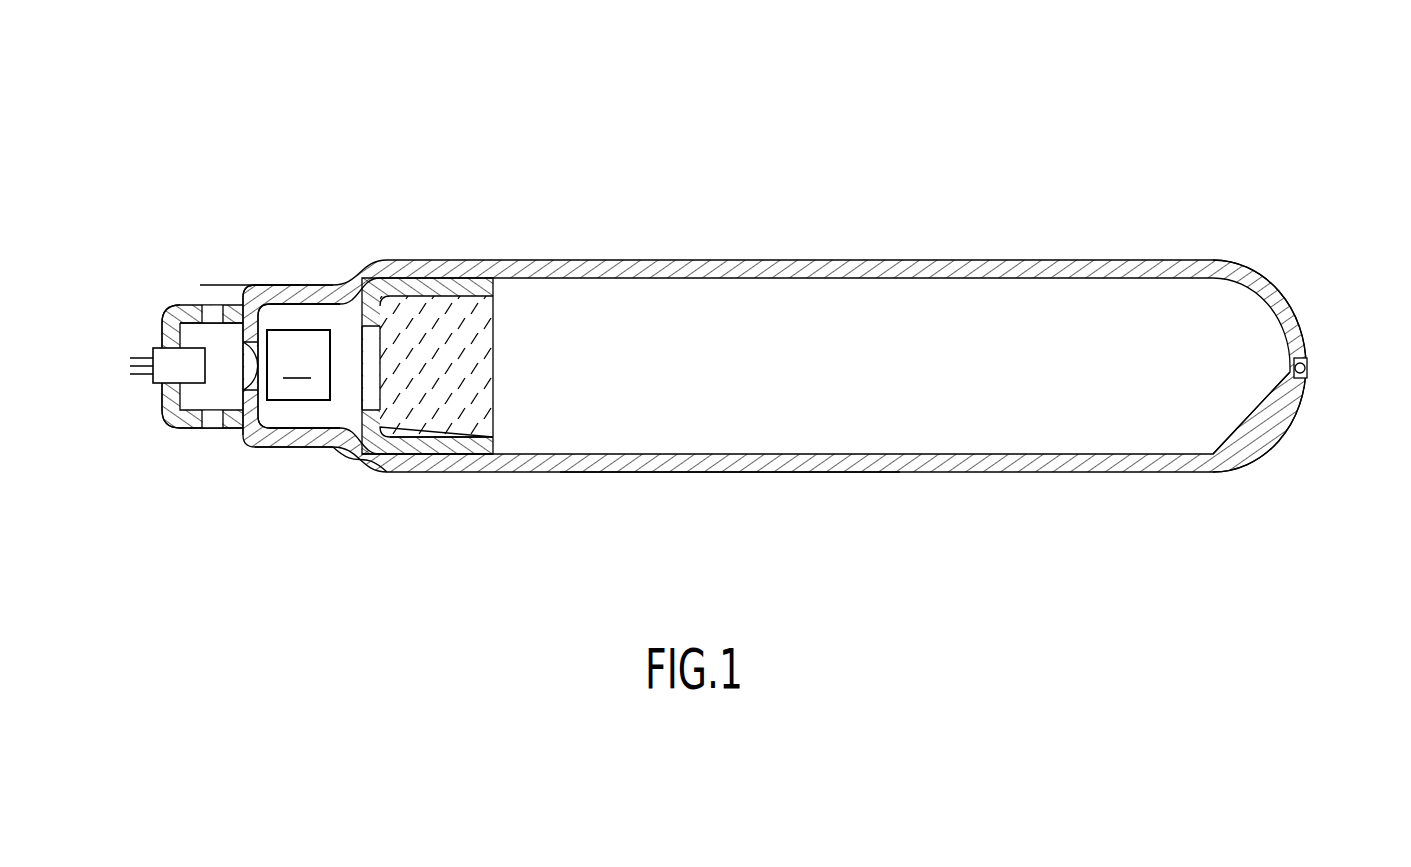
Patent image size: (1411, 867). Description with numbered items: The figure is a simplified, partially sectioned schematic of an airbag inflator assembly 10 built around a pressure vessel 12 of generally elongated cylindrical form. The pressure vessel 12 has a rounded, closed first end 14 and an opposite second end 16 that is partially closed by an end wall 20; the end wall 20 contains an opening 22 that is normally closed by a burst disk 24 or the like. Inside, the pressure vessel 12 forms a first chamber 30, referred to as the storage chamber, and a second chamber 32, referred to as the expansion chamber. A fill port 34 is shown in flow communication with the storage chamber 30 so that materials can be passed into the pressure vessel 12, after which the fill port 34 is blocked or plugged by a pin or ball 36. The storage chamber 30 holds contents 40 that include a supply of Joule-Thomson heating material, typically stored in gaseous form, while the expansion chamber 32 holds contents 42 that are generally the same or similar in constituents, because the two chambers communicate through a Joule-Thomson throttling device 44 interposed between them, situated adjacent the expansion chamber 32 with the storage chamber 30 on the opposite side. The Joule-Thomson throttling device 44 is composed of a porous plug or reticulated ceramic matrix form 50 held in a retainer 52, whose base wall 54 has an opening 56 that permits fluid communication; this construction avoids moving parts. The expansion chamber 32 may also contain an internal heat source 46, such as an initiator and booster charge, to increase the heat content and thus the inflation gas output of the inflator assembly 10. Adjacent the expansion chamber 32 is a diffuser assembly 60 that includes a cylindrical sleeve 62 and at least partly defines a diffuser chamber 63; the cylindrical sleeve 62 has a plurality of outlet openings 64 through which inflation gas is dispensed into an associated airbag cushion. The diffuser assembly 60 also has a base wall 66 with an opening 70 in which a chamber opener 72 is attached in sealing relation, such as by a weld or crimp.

The inflator assembly 10 is at (845, 158).
The pressure vessel 12 is at (712, 256).
The first end 14 is at (1297, 282).
The second end 16 is at (246, 244).
The end wall 20 is at (240, 418).
The opening 22 is at (242, 302).
The burst disk 24 is at (243, 367).
The first chamber 30 is at (717, 478).
The second chamber 32 is at (288, 448).
The fill port 34 is at (1302, 398).
The ball 36 is at (1308, 358).
The contents 40 is at (930, 432).
The contents 42 is at (337, 322).
The Joule-Thomson throttling device 44 is at (407, 425).
The heat source 46 is at (298, 365).
The matrix form 50 is at (463, 332).
The retainer 52 is at (461, 450).
The base wall 54 is at (340, 443).
The opening 56 is at (386, 360).
The diffuser assembly 60 is at (140, 298).
The cylindrical sleeve 62 is at (173, 427).
The diffuser chamber 63 is at (194, 334).
The outlet openings 64 is at (213, 420).
The base wall 66 is at (162, 342).
The opening 70 is at (163, 392).
The chamber opener 72 is at (128, 364).